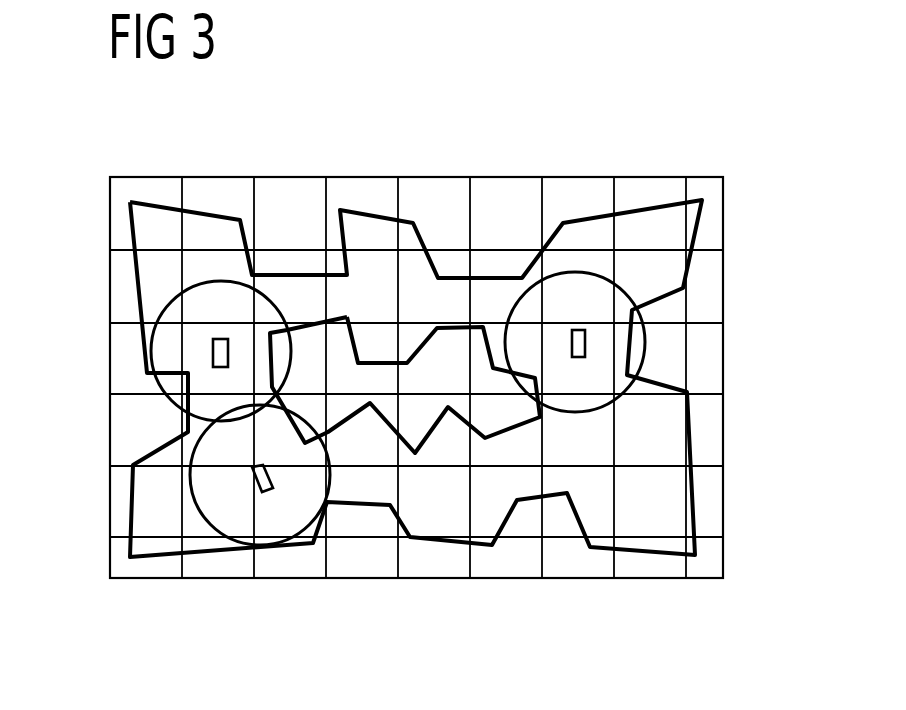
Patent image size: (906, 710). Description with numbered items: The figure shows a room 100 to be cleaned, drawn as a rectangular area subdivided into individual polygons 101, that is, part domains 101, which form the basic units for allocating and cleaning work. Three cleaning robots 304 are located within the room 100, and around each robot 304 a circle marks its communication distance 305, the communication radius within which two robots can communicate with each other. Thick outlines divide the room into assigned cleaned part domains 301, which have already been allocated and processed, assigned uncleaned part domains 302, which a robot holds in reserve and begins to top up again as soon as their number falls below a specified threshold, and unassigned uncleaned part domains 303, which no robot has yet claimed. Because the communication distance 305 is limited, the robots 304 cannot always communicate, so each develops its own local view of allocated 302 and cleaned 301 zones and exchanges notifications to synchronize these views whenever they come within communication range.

The room to be cleaned 100 is at (407, 177).
The polygons / part domains 101 is at (342, 177).
The assigned cleaned part domains 301 is at (133, 223).
The assigned uncleaned part domains 302 is at (133, 280).
The unassigned uncleaned part domains 303 is at (483, 502).
The cleaning robots 304 is at (220, 339).
The communication distance / communication radius 305 is at (165, 405).